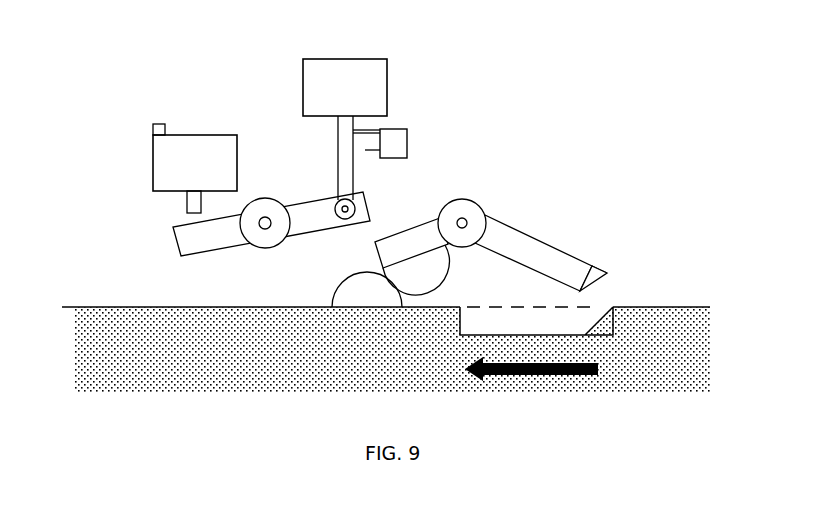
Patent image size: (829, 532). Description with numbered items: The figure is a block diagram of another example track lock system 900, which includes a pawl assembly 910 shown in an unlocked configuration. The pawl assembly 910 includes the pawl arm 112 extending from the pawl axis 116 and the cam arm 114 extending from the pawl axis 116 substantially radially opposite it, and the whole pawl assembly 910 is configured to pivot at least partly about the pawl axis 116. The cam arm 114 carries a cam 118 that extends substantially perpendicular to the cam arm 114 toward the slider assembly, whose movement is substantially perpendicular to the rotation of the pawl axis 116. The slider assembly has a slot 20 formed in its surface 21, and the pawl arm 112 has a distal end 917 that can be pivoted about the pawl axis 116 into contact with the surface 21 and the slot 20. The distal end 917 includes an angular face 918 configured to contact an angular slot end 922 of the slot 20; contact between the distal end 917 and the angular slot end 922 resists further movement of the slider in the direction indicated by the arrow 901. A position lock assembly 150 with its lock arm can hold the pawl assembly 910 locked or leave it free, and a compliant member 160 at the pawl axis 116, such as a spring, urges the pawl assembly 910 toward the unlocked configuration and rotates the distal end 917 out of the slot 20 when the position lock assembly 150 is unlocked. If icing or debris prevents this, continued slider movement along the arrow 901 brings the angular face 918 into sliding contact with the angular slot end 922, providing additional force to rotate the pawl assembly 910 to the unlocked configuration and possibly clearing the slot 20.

The track lock system 900 is at (78, 43).
The position lock assembly 150 is at (432, 120).
The pawl assembly 910 is at (503, 153).
The cam arm 114 is at (412, 232).
The compliant member 160 is at (472, 199).
The pawl axis 116 is at (468, 215).
The pawl arm 112 is at (562, 247).
The distal end 917 is at (609, 272).
The angular face 918 is at (596, 283).
The cam 118 is at (445, 277).
The slot 20 is at (609, 300).
The surface 21 is at (93, 306).
The angular slot end 922 is at (613, 336).
The arrow 901 is at (553, 375).